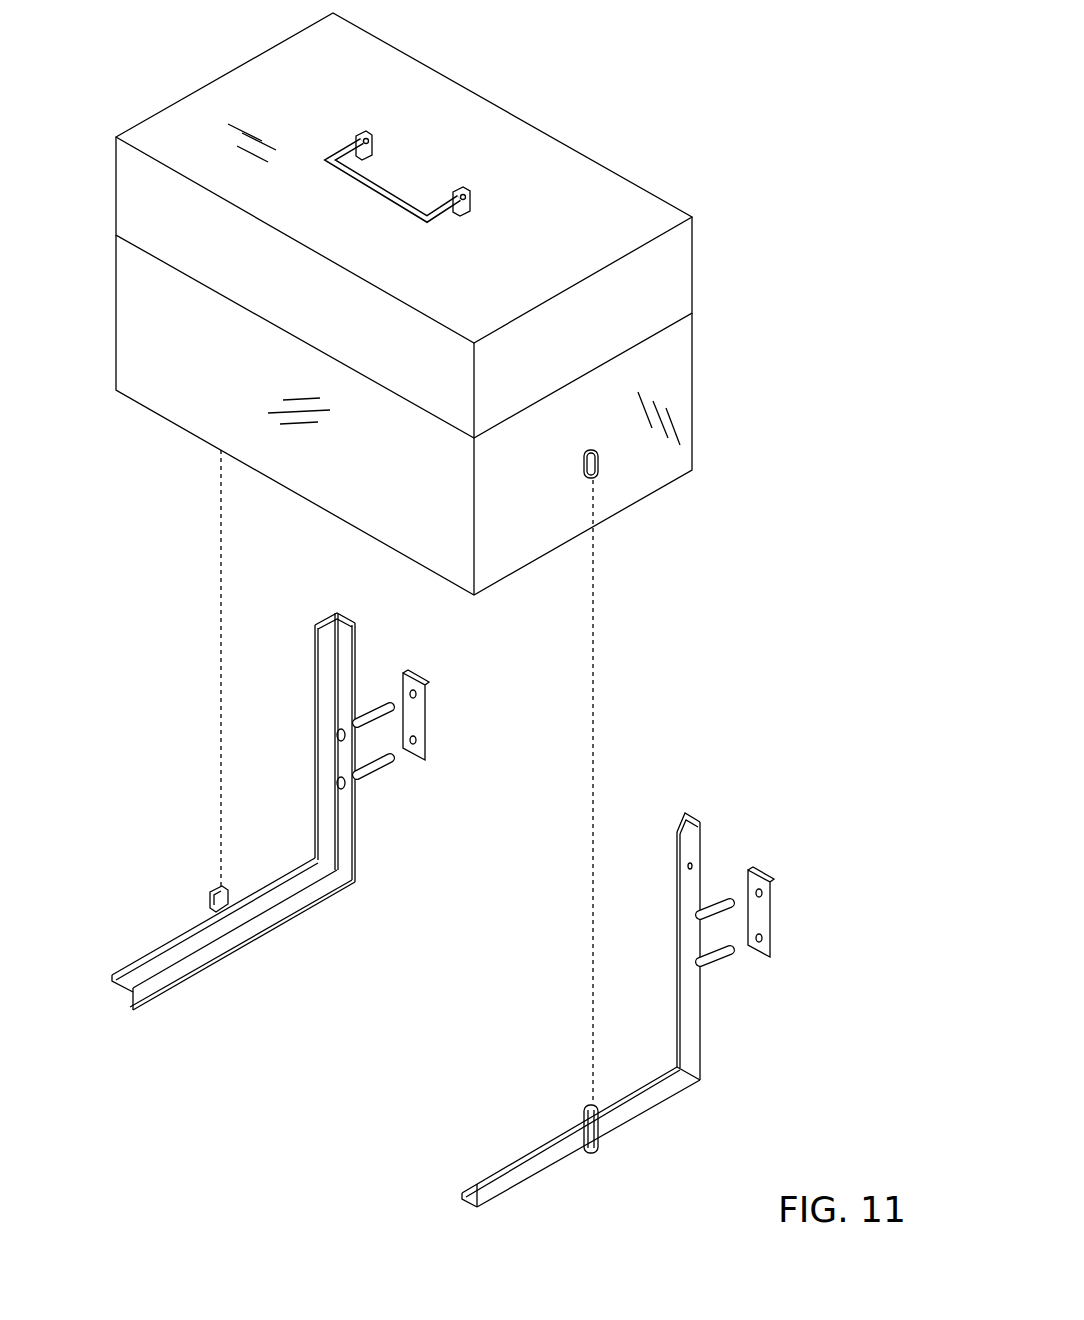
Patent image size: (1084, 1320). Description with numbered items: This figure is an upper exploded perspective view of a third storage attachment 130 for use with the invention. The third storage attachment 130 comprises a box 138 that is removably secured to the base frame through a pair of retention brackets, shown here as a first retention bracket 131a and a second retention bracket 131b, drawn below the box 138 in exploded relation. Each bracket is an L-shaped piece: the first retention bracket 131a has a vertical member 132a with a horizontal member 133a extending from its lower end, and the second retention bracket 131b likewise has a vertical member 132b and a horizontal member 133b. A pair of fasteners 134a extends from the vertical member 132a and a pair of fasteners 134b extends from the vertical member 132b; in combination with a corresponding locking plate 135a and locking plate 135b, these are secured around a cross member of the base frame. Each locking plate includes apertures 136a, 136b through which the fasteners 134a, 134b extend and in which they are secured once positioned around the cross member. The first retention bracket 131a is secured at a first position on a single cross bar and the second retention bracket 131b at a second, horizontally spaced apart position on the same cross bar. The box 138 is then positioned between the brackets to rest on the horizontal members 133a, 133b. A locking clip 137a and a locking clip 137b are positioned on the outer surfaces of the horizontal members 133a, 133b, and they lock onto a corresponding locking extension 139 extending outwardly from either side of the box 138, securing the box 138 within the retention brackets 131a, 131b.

The third storage attachment 130 is at (459, 304).
The box 138 is at (643, 289).
The locking extension 139 is at (598, 471).
The first retention bracket 131a is at (233, 972).
The vertical member 132a is at (357, 648).
The horizontal member 133a is at (150, 990).
The fasteners 134a is at (385, 779).
The locking plate 135a is at (478, 717).
The apertures 136a is at (427, 690).
The locking clip 137a is at (207, 893).
The second retention bracket 131b is at (641, 1148).
The vertical member 132b is at (703, 843).
The horizontal member 133b is at (510, 1184).
The fasteners 134b is at (722, 975).
The locking plate 135b is at (824, 917).
The apertures 136b is at (773, 892).
The locking clip 137b is at (600, 1140).